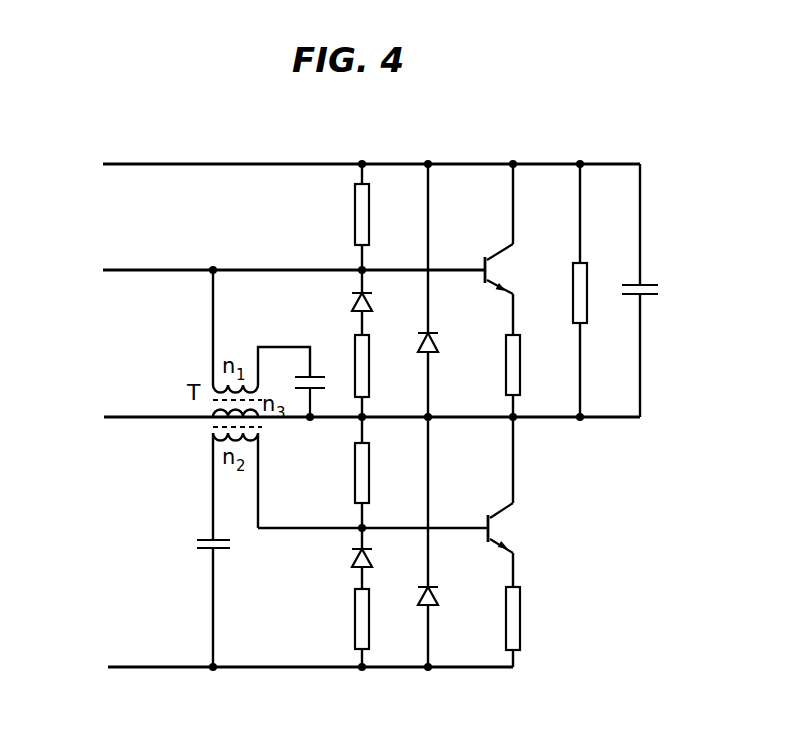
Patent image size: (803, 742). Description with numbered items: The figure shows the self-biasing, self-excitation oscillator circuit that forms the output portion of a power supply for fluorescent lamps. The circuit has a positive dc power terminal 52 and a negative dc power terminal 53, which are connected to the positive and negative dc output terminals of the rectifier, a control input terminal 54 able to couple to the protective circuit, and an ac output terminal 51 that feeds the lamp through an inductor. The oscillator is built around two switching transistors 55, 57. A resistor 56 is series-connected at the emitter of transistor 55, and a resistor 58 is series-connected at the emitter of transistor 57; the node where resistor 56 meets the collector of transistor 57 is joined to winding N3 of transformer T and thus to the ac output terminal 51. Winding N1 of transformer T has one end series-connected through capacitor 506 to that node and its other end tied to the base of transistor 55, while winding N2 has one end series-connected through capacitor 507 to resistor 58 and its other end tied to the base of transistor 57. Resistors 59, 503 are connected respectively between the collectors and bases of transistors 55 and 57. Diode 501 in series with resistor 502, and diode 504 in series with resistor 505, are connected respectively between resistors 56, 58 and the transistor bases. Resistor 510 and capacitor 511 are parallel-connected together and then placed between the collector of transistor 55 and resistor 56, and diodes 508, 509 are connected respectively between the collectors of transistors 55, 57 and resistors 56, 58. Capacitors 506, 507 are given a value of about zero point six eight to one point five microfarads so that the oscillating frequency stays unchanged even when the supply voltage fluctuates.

The positive dc power terminal 52 is at (359, 164).
The control input terminal 54 is at (281, 270).
The ac output terminal 51 is at (359, 418).
The negative dc power terminal 53 is at (297, 672).
The resistor 59 is at (352, 220).
The diode 501 is at (352, 303).
The resistor 502 is at (370, 362).
The resistor 503 is at (370, 470).
The diode 504 is at (352, 561).
The resistor 505 is at (356, 628).
The capacitor 506 is at (320, 372).
The capacitor 507 is at (205, 540).
The diode 508 is at (438, 346).
The diode 509 is at (440, 598).
The resistor 510 is at (572, 305).
The capacitor 511 is at (645, 284).
The switching transistor 55 is at (500, 248).
The resistor 56 is at (520, 360).
The switching transistor 57 is at (505, 520).
The resistor 58 is at (522, 620).